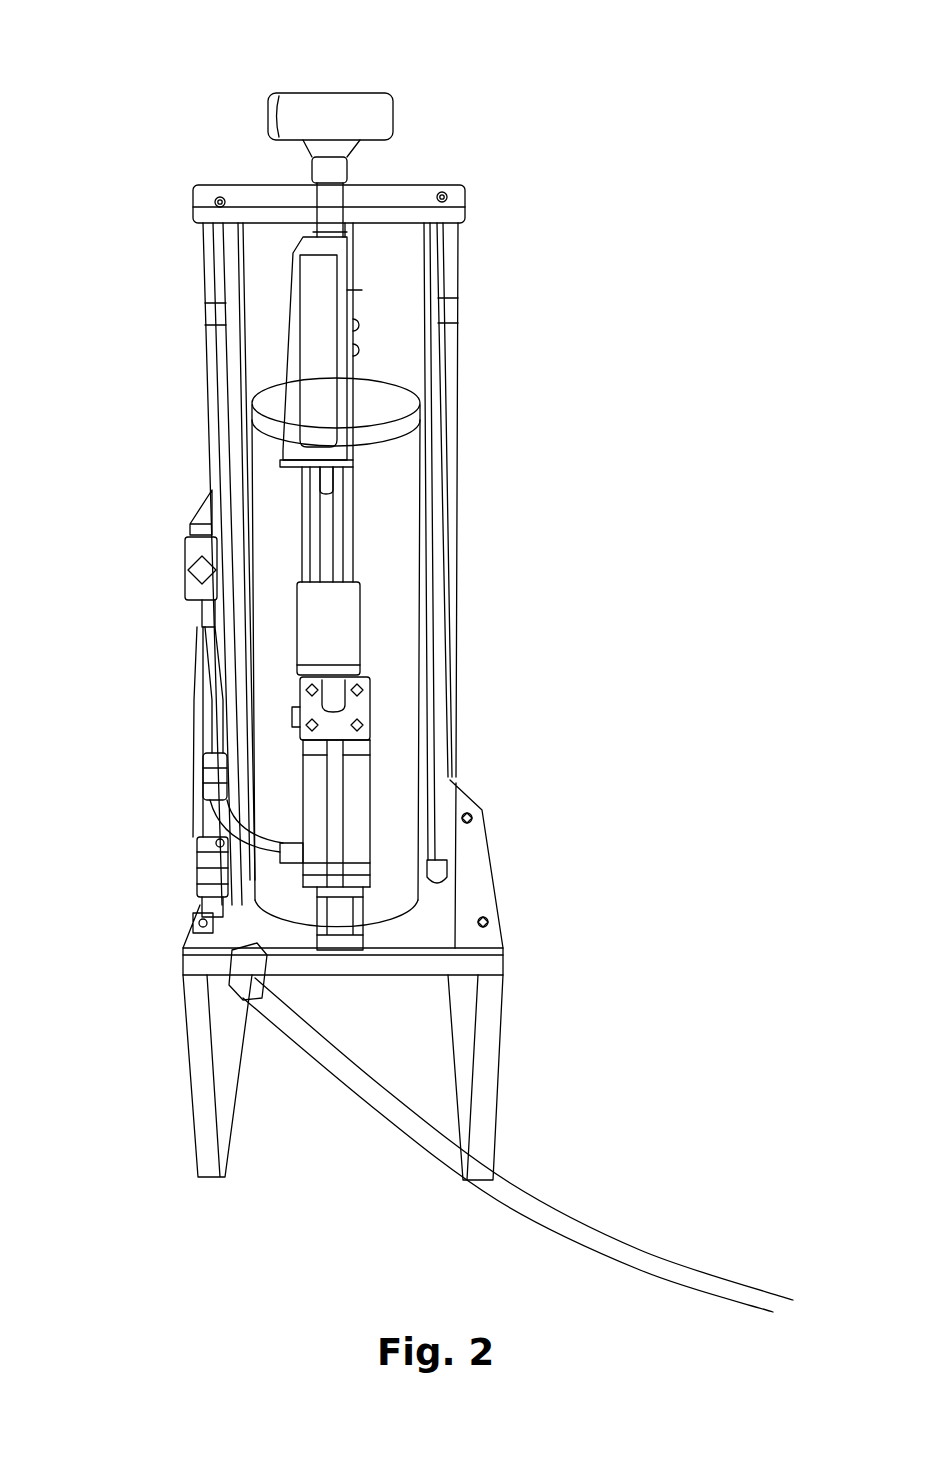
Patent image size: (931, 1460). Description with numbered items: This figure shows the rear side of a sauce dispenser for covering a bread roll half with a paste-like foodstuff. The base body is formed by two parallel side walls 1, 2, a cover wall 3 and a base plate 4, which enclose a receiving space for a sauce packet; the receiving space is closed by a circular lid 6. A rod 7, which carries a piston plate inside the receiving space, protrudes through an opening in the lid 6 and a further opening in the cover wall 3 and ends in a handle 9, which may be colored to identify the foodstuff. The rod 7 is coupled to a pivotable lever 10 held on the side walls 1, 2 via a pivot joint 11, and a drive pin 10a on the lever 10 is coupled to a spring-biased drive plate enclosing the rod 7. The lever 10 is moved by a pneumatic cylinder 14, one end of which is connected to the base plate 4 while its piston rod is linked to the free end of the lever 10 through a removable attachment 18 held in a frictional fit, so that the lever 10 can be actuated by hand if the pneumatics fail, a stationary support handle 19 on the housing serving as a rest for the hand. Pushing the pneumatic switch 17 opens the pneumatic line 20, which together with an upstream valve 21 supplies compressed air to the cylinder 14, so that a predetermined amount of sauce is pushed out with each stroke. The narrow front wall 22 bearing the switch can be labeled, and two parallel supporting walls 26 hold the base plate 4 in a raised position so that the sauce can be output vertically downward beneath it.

The side wall 1 is at (448, 372).
The side wall 2 is at (212, 357).
The cover wall 3 is at (247, 203).
The base plate 4 is at (190, 940).
The circular lid 6 is at (273, 408).
The rod 7 is at (349, 180).
The handle 9 is at (362, 102).
The lever 10 is at (333, 510).
The drive pin 10a is at (357, 328).
The pivot joint 11 is at (357, 290).
The pneumatic cylinder 14 is at (355, 807).
The pneumatic switch 17 is at (198, 572).
The attachment 18 is at (323, 630).
The support handle 19 is at (310, 325).
The pneumatic line 20 is at (393, 1115).
The valve 21 is at (213, 880).
The narrow front wall 22 is at (257, 252).
The supporting walls 26 is at (200, 1070).